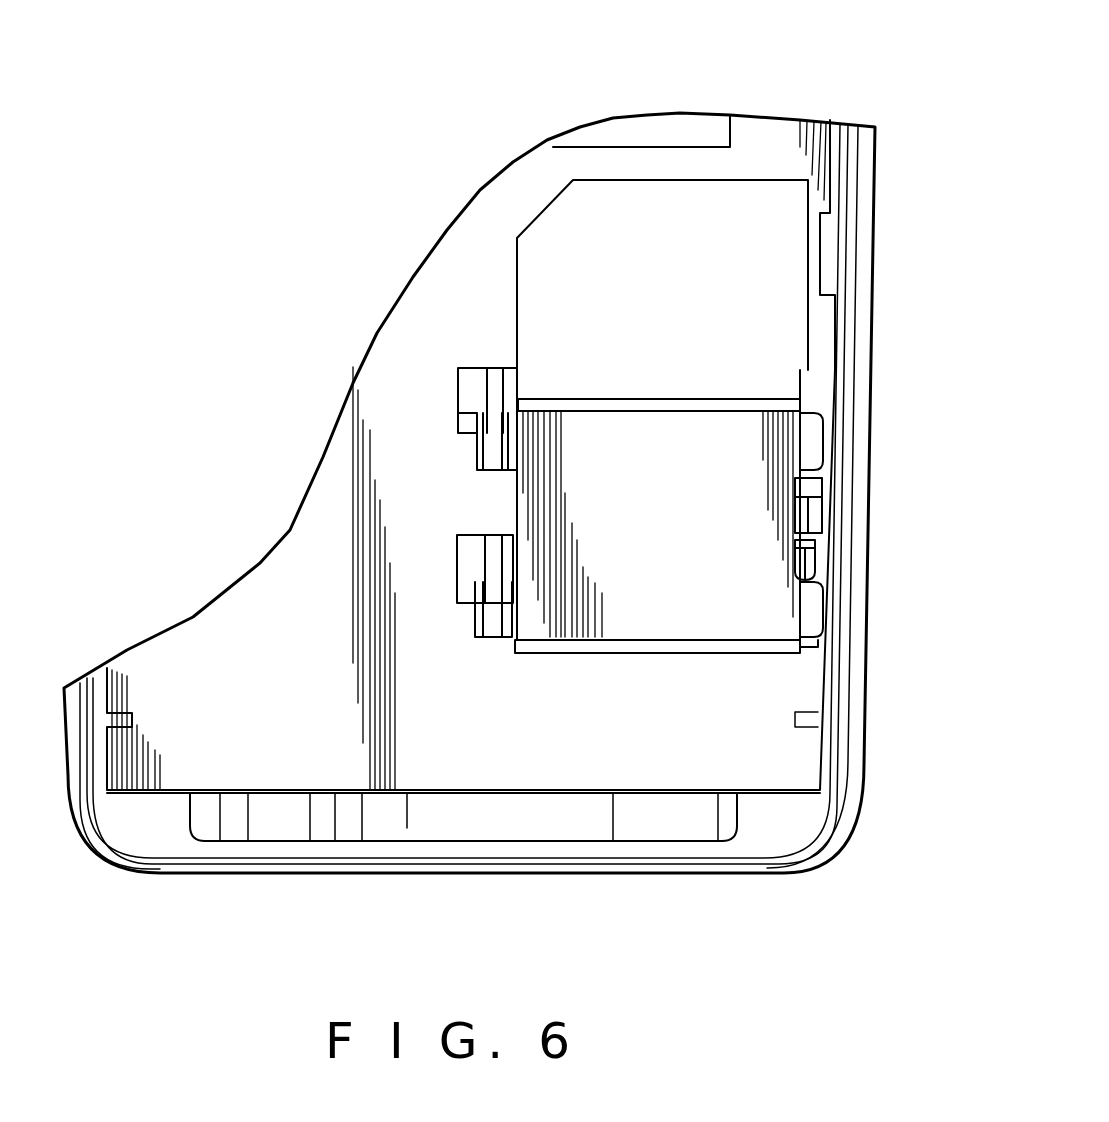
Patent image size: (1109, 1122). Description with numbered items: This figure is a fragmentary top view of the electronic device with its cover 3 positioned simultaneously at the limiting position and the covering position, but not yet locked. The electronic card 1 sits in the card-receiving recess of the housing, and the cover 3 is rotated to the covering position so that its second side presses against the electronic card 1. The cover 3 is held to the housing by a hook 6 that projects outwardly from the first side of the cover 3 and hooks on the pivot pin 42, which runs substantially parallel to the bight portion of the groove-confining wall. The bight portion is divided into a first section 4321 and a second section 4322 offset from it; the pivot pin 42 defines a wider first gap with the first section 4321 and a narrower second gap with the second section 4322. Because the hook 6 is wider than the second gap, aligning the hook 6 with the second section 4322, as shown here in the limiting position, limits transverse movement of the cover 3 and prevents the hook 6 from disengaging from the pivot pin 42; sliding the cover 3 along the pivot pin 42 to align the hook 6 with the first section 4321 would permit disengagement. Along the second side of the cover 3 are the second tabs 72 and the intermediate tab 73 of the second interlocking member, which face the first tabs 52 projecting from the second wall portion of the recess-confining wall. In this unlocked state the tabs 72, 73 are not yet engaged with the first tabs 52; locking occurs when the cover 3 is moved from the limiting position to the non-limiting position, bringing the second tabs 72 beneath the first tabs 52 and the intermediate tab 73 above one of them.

The electronic card 1 is at (782, 172).
The cover 3 is at (557, 390).
The hook 6 is at (487, 393).
The first section 4321 is at (480, 421).
The second section 4322 is at (482, 455).
The pivot pin 42 is at (493, 605).
The second tab 72 is at (823, 440).
The intermediate tab 73 is at (810, 516).
The first tab 52 is at (822, 560).